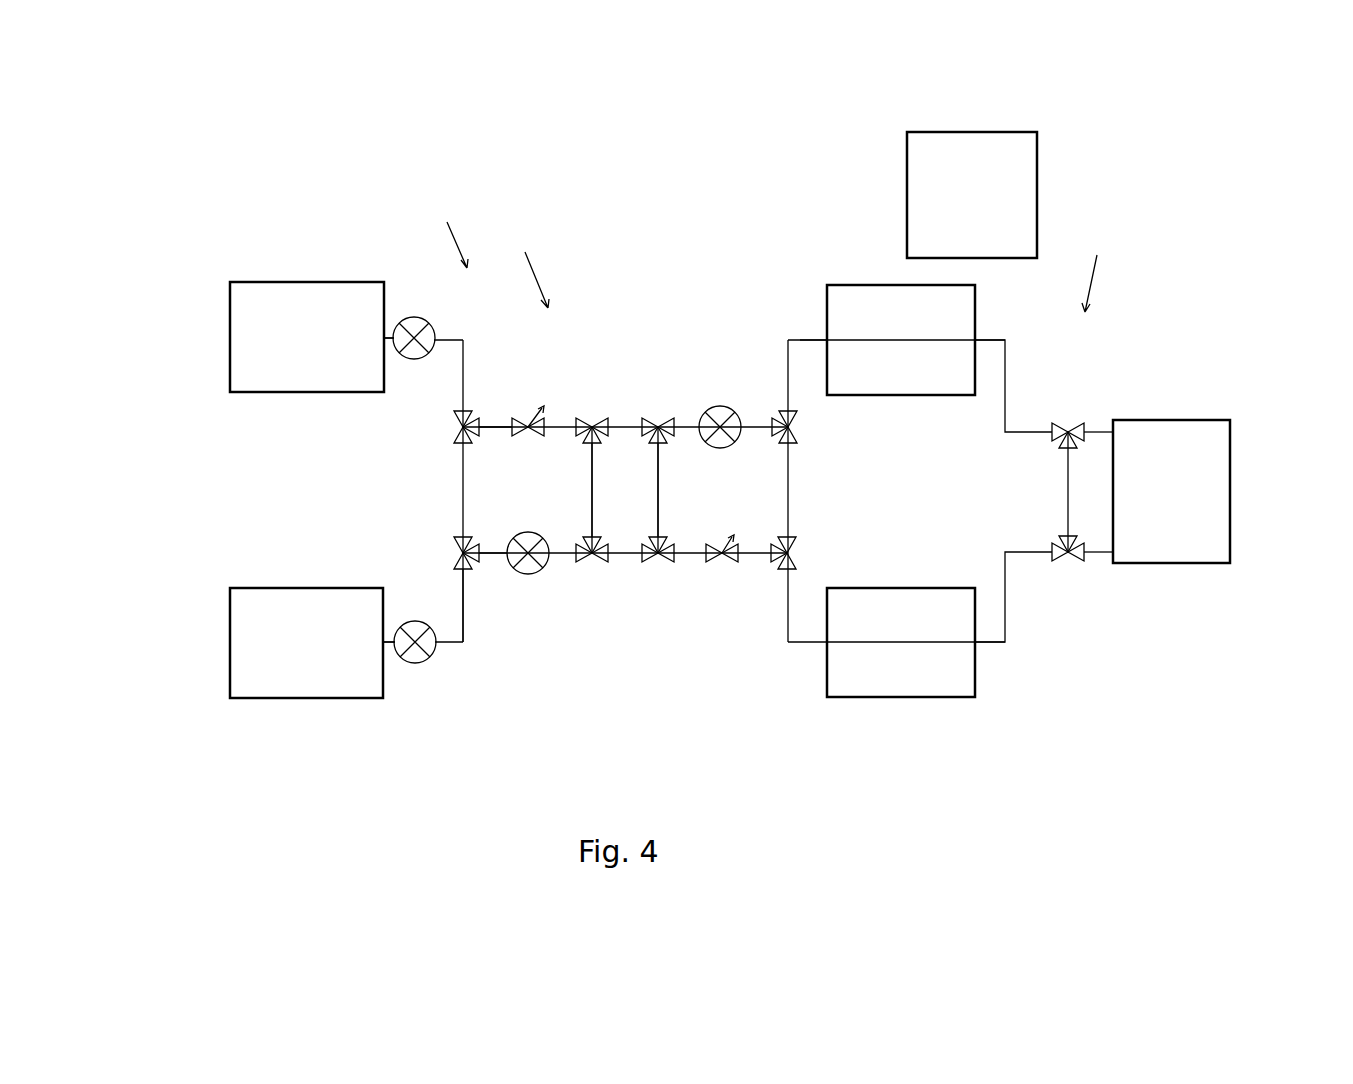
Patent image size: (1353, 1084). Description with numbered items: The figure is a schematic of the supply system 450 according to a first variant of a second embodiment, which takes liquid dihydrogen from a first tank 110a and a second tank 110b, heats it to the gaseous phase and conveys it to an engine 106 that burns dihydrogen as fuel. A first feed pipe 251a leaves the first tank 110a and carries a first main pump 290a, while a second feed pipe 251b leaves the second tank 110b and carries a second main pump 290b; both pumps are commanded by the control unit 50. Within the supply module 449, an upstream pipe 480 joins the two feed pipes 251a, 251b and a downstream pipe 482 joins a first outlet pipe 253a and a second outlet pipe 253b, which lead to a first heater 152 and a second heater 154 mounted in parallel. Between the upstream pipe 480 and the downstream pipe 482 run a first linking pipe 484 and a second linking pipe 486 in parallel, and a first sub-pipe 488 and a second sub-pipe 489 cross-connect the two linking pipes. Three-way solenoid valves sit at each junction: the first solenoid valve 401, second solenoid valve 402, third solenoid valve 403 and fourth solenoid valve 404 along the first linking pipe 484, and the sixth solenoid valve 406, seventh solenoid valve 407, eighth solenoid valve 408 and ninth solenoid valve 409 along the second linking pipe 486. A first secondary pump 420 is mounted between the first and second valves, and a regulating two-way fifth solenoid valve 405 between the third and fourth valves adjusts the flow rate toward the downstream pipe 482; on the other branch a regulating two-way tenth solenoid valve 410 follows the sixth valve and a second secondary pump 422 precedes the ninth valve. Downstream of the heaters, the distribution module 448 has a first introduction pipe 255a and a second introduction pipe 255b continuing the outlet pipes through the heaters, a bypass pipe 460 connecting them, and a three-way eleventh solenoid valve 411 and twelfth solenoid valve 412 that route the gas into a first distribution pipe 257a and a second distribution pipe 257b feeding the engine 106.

The control unit 50 is at (1025, 198).
The engine 106 is at (1225, 505).
The first tank 110a is at (230, 360).
The second tank 110b is at (230, 673).
The first heater 152 is at (940, 312).
The second heater 154 is at (945, 675).
The first feed pipe 251a is at (388, 338).
The second feed pipe 251b is at (383, 650).
The first outlet pipe 253a is at (812, 340).
The second outlet pipe 253b is at (815, 642).
The first introduction pipe 255a is at (990, 342).
The second introduction pipe 255b is at (985, 642).
The first distribution pipe 257a is at (1098, 430).
The second distribution pipe 257b is at (1098, 556).
The first main pump 290a is at (434, 331).
The second main pump 290b is at (433, 655).
The first solenoid valve 401 is at (450, 553).
The second solenoid valve 402 is at (592, 556).
The third solenoid valve 403 is at (658, 556).
The fourth solenoid valve 404 is at (790, 550).
The fifth solenoid valve 405 is at (725, 565).
The sixth solenoid valve 406 is at (450, 427).
The seventh solenoid valve 407 is at (592, 418).
The eighth solenoid valve 408 is at (658, 418).
The ninth solenoid valve 409 is at (790, 430).
The tenth solenoid valve 410 is at (541, 406).
The eleventh solenoid valve 411 is at (1073, 425).
The twelfth solenoid valve 412 is at (1068, 556).
The first secondary pump 420 is at (540, 568).
The second secondary pump 422 is at (720, 406).
The distribution module 448 is at (1092, 271).
The supply module 449 is at (527, 269).
The supply system 450 is at (436, 239).
The bypass pipe 460 is at (1068, 490).
The upstream pipe 480 is at (463, 642).
The downstream pipe 482 is at (790, 350).
The first linking pipe 484 is at (490, 545).
The second linking pipe 486 is at (485, 432).
The first sub-pipe 488 is at (592, 492).
The second sub-pipe 489 is at (658, 492).